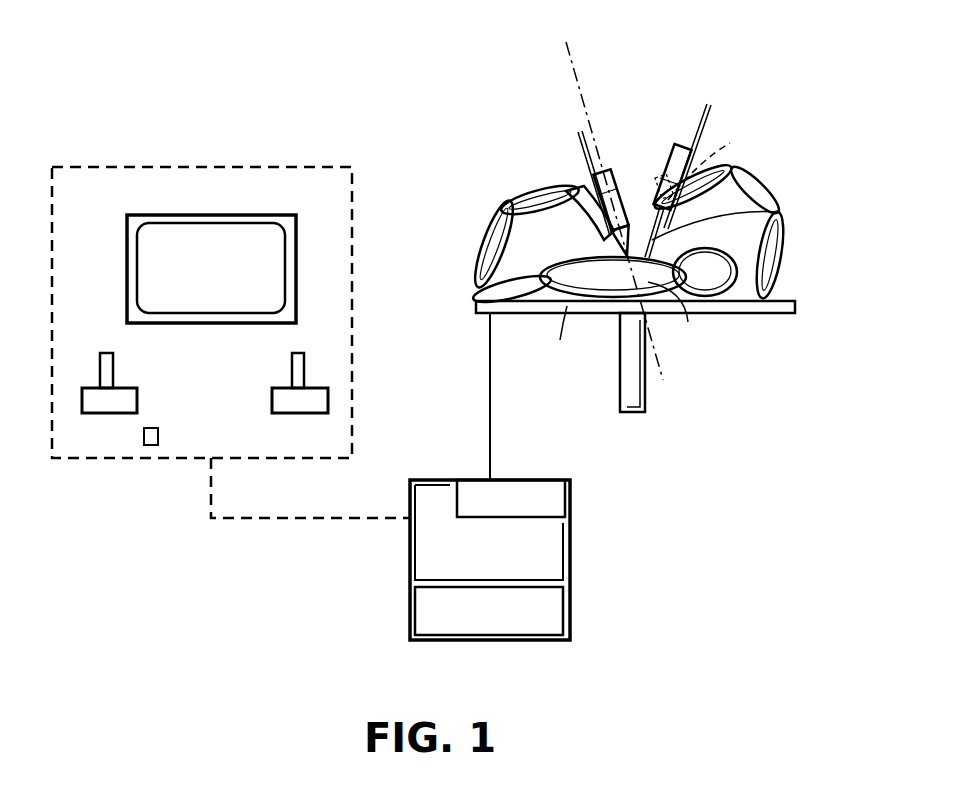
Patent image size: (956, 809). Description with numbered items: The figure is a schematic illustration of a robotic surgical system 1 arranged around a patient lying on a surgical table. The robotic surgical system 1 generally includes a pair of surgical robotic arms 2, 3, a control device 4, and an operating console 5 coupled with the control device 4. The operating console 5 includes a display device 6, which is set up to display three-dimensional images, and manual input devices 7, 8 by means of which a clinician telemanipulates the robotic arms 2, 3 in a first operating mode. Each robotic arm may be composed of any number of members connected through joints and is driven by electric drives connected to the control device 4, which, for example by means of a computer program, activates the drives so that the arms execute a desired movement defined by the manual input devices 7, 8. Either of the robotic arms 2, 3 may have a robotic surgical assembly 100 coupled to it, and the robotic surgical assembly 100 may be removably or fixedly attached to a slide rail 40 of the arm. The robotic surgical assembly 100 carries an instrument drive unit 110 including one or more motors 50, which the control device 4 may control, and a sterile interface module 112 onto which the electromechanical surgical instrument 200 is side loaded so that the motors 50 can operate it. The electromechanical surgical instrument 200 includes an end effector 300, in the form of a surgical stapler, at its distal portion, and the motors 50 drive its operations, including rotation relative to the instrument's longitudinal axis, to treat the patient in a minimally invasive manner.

The robotic surgical system 1 is at (706, 515).
The surgical robotic arm 2 is at (505, 206).
The surgical robotic arm 3 is at (738, 208).
The control device 4 is at (480, 553).
The operating console 5 is at (231, 297).
The display device 6 is at (208, 276).
The manual input device 7 is at (93, 404).
The manual input device 8 is at (299, 404).
The slide rail 40 is at (574, 136).
The motor 50 is at (709, 161).
The robotic surgical assembly 100 is at (642, 138).
The instrument drive unit 110 is at (678, 145).
The sterile interface module 112 is at (774, 212).
The electromechanical surgical instrument 200 is at (600, 247).
The end effector 300 is at (628, 265).